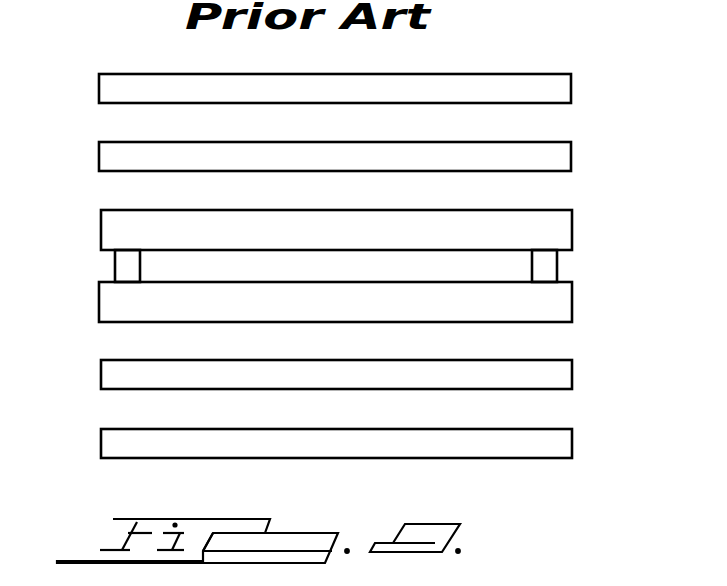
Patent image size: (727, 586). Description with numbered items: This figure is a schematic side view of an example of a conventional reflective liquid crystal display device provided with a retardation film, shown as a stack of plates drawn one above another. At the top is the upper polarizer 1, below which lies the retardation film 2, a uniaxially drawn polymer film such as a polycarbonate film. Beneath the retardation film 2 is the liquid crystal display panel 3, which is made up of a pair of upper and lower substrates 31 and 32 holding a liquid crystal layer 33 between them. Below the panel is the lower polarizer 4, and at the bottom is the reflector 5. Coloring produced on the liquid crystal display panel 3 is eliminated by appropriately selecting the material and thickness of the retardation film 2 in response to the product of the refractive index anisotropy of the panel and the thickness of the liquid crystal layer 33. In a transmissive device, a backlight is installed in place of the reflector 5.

The upper polarizer 1 is at (556, 92).
The retardation film 2 is at (556, 160).
The liquid crystal display panel 3 is at (330, 271).
The upper substrate 31 is at (113, 233).
The lower substrate 32 is at (118, 299).
The liquid crystal layer 33 is at (162, 265).
The lower polarizer 4 is at (558, 380).
The reflector 5 is at (558, 448).